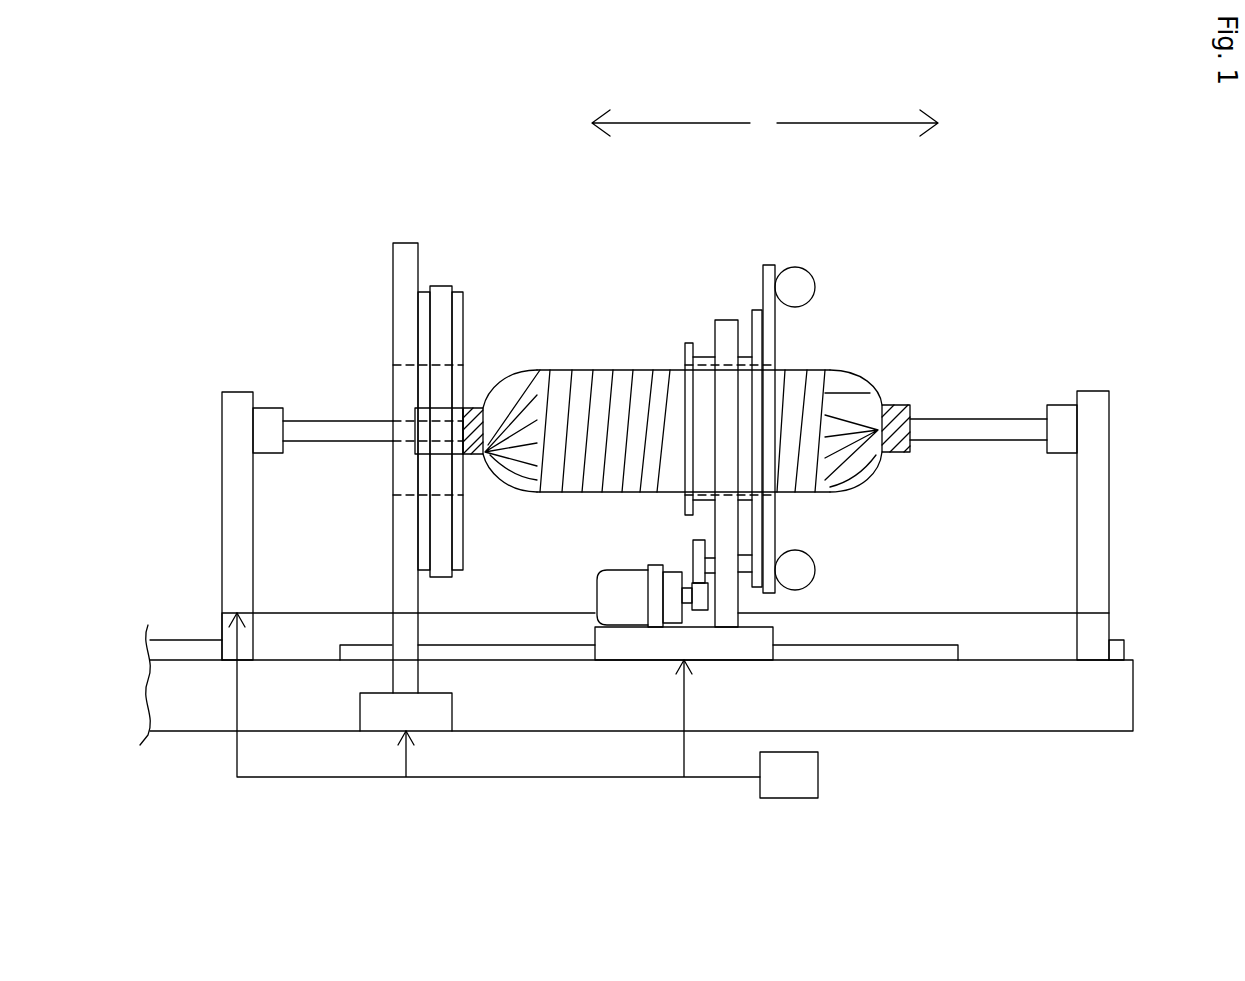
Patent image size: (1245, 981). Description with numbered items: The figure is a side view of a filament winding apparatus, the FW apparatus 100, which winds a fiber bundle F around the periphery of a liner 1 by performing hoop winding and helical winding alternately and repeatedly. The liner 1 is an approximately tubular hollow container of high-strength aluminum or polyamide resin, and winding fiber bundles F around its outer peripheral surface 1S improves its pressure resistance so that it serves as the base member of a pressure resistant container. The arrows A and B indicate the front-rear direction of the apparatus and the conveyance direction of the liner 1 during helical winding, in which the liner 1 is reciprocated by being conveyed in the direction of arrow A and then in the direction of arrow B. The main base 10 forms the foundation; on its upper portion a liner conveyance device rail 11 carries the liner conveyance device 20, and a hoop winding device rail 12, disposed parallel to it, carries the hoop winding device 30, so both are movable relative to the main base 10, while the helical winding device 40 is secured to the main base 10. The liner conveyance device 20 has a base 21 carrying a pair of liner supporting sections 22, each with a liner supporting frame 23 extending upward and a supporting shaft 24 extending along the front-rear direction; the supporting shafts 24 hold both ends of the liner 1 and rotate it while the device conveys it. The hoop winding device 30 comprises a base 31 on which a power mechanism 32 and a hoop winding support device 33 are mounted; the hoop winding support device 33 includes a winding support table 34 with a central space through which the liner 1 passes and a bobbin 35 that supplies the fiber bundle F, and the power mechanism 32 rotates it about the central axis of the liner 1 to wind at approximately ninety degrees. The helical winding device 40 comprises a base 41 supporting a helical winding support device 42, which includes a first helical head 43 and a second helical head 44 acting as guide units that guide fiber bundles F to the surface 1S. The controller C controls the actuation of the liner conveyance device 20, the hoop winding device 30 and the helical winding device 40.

The FW apparatus 100 is at (281, 185).
The main base 10 is at (940, 712).
The liner conveyance device rail 11 is at (168, 641).
The hoop winding device rail 12 is at (510, 641).
The liner conveyance device 20 is at (183, 330).
The base 21 is at (313, 613).
The liner supporting section 22 is at (224, 360).
The liner supporting frame 23 is at (237, 470).
The supporting shaft 24 is at (333, 433).
The helical winding device 40 is at (408, 205).
The base 41 is at (398, 255).
The helical winding support device 42 is at (466, 225).
The first helical head 43 is at (452, 292).
The second helical head 44 is at (436, 286).
The liner 1 is at (640, 312).
The outer peripheral surface 1S is at (585, 370).
The fiber bundle F is at (549, 380).
The hoop winding device 30 is at (740, 205).
The base 31 is at (712, 320).
The power mechanism 32 is at (590, 555).
The hoop winding support device 33 is at (776, 243).
The winding support table 34 is at (762, 310).
The bobbin 35 is at (808, 283).
The controller C is at (818, 777).
The arrow A is at (671, 114).
The arrow B is at (857, 114).